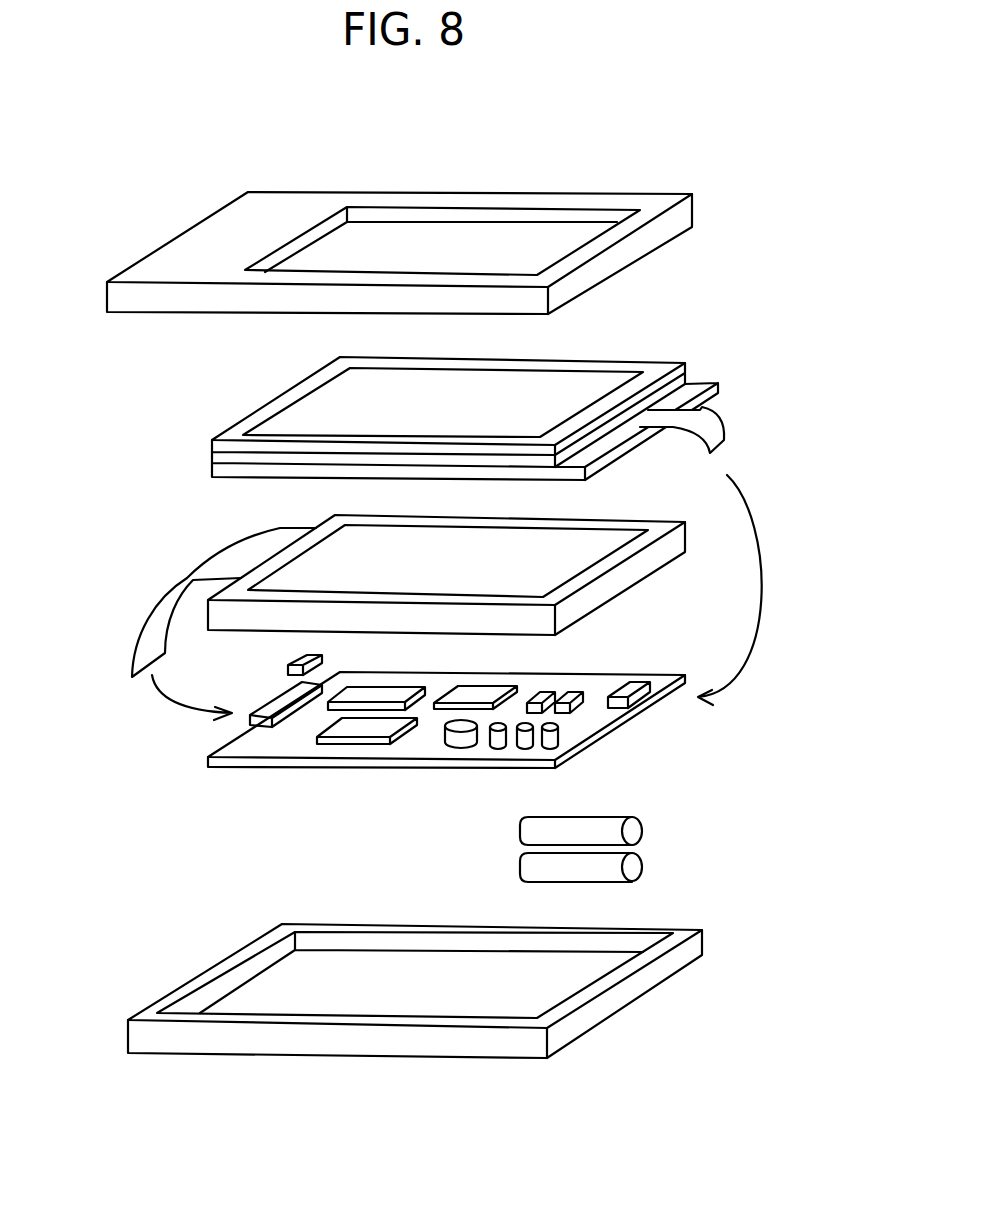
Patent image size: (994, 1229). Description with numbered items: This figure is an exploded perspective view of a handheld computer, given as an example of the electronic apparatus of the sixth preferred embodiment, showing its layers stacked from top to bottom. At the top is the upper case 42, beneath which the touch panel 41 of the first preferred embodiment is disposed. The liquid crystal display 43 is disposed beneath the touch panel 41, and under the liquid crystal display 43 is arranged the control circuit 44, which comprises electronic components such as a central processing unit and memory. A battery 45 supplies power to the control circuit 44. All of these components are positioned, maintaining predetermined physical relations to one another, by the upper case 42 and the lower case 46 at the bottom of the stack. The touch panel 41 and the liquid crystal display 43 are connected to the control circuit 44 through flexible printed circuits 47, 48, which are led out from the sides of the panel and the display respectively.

The touch panel 41 is at (252, 412).
The upper case 42 is at (140, 258).
The liquid crystal display (LCD) 43 is at (633, 587).
The control circuit 44 is at (208, 758).
The battery 45 is at (533, 870).
The lower case 46 is at (163, 998).
The flexible printed circuit 47 is at (724, 415).
The flexible printed circuit 48 is at (147, 608).